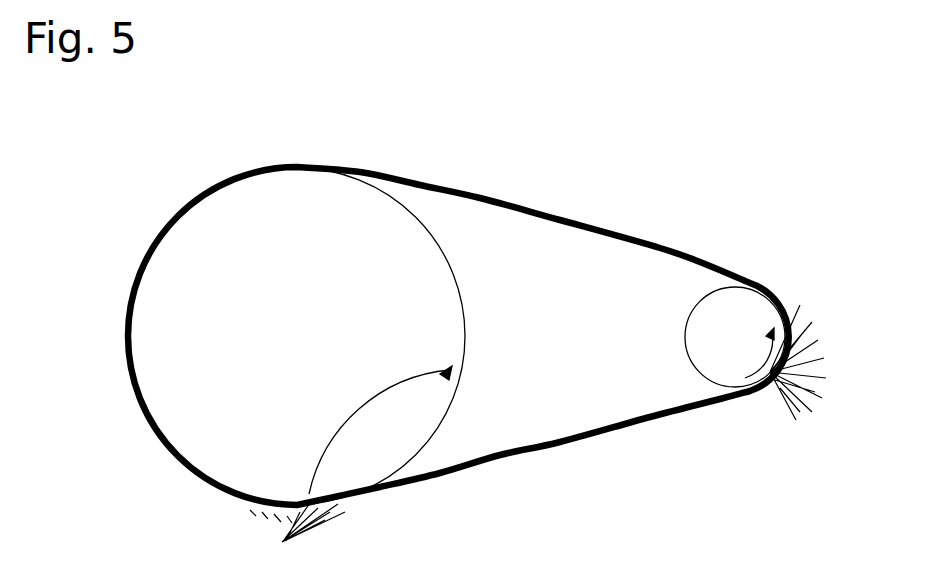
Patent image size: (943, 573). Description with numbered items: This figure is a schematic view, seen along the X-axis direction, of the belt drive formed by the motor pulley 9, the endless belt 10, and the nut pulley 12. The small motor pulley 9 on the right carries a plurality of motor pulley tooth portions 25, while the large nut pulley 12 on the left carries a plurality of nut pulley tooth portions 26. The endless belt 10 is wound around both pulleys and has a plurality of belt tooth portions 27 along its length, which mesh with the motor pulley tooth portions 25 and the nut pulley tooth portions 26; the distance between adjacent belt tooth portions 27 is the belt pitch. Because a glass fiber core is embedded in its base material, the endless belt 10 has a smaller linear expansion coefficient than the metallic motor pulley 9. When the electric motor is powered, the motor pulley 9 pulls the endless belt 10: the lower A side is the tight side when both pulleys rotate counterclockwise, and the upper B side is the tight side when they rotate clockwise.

The endless belt 10 is at (674, 246).
The nut pulley 12 is at (470, 306).
The nut pulley tooth portions 26 is at (470, 352).
The motor pulley 9 is at (684, 316).
The motor pulley tooth portions 25 is at (690, 350).
The belt tooth portions 27 is at (573, 226).
The A side A is at (578, 440).
The B side B is at (548, 212).